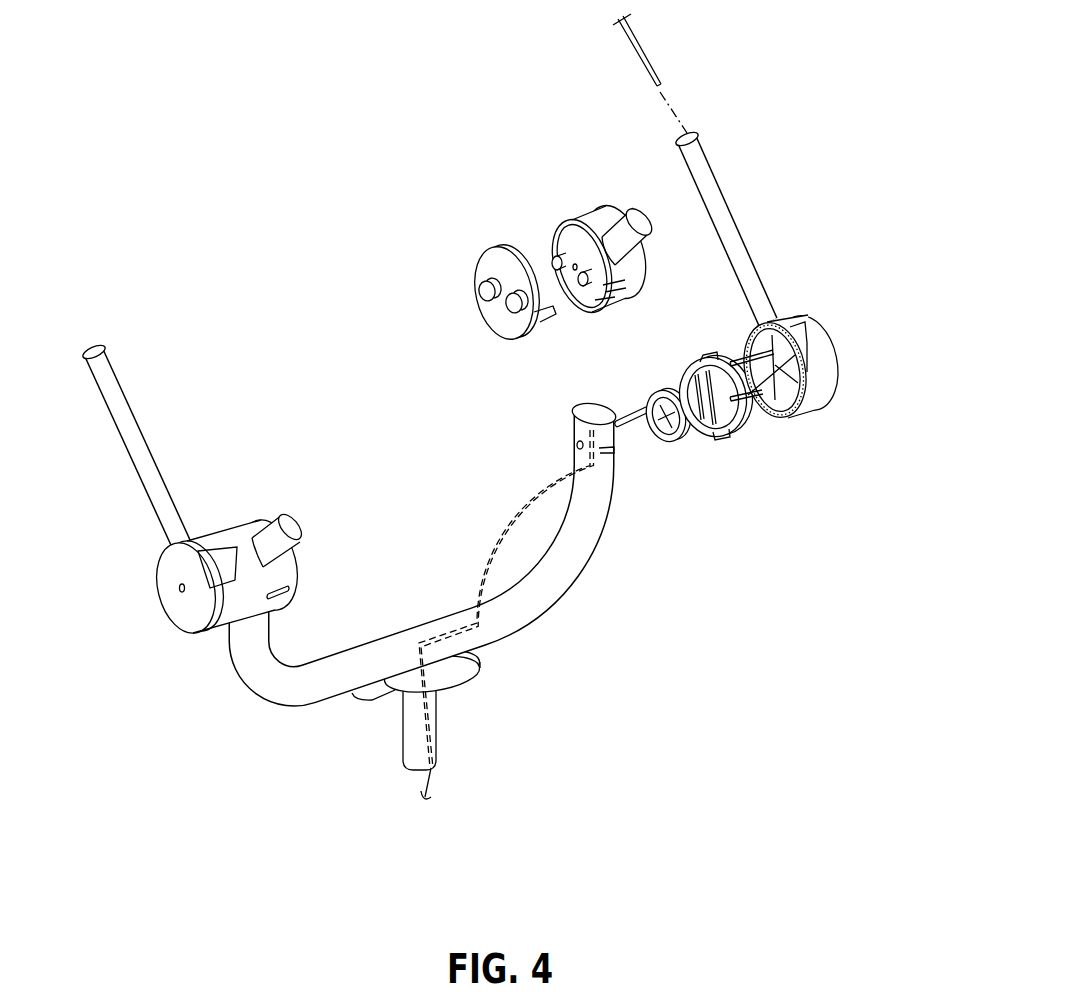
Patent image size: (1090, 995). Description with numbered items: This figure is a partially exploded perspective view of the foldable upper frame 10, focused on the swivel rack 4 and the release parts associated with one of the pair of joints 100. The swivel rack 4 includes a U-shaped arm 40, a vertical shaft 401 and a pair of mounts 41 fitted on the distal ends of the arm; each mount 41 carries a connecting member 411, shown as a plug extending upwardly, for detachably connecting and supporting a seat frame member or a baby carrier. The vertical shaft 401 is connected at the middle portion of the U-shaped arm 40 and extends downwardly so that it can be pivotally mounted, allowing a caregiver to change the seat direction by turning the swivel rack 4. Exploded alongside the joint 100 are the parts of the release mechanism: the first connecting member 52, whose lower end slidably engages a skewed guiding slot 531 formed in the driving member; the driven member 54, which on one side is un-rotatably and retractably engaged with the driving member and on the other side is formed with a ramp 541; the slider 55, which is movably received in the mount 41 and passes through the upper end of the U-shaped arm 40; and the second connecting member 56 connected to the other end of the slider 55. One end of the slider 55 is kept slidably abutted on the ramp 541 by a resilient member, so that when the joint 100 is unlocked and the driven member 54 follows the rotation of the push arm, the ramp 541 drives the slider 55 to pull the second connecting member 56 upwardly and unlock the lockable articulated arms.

The swivel rack 4 is at (234, 713).
The foldable upper frame 10 is at (110, 390).
The U-shaped arm 40 is at (440, 622).
The mount 41 is at (223, 533).
The connecting member 411 is at (290, 520).
The first connecting member 52 is at (643, 55).
The driven member 54 is at (683, 437).
The slider 55 is at (623, 412).
The second connecting member 56 is at (433, 778).
The joint 100 is at (815, 403).
The vertical shaft 401 is at (410, 750).
The skewed guiding slot 531 is at (737, 360).
The ramp 541 is at (661, 392).